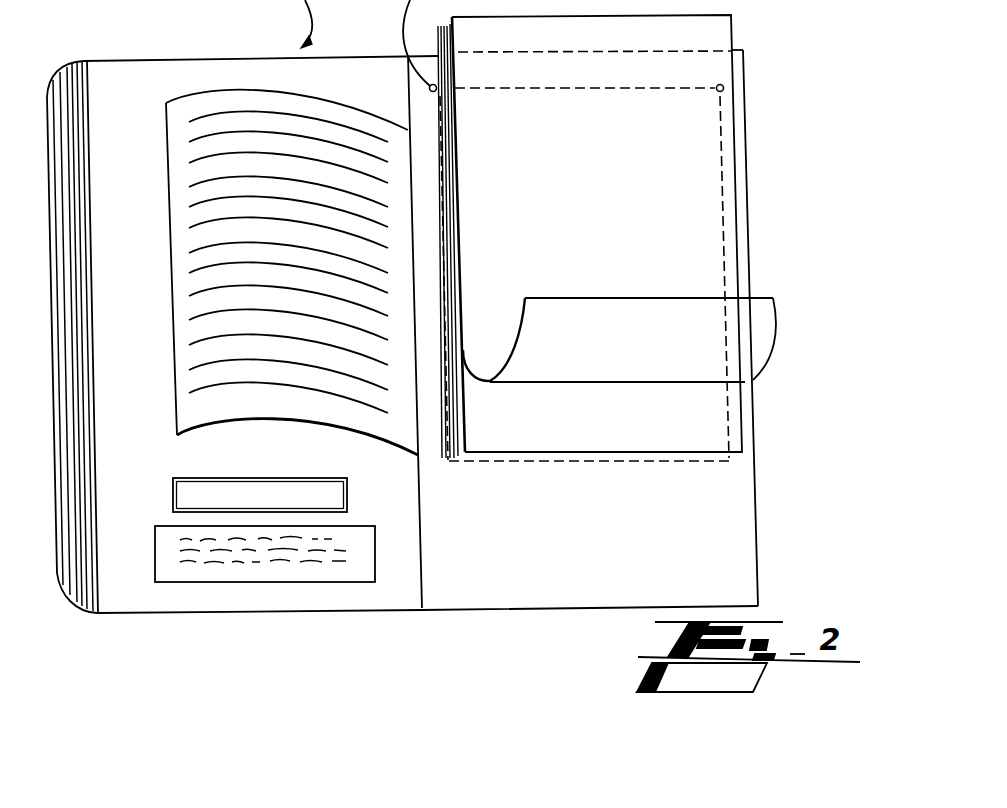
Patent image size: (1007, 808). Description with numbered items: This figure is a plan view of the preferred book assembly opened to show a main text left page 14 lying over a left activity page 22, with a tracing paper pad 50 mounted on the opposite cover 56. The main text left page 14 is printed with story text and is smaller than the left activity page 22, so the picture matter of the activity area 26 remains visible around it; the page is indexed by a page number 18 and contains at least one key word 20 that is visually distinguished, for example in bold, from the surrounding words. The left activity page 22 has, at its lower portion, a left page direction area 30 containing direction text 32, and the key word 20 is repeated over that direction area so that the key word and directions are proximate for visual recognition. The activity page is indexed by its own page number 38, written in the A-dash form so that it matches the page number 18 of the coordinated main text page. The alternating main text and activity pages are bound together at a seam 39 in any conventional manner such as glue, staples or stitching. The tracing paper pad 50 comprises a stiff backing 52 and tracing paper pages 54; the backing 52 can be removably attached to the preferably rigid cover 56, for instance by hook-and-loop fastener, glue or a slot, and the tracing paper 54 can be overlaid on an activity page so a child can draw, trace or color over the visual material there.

The main text left page 14 is at (188, 110).
The page number 18 is at (178, 407).
The key word 20 is at (228, 226).
The left activity page 22 is at (105, 85).
The activity area 26 is at (113, 322).
The left page direction area 30 is at (193, 583).
The direction text 32 is at (280, 565).
The page number 38 is at (130, 613).
The seam 39 is at (408, 85).
The tracing paper pad 50 is at (622, 465).
The stiff backing 52 is at (528, 462).
The tracing paper pages 54 is at (593, 297).
The cover 56 is at (710, 522).